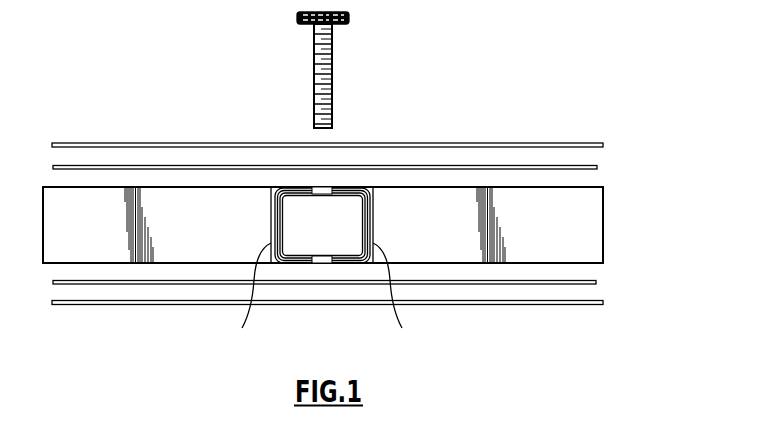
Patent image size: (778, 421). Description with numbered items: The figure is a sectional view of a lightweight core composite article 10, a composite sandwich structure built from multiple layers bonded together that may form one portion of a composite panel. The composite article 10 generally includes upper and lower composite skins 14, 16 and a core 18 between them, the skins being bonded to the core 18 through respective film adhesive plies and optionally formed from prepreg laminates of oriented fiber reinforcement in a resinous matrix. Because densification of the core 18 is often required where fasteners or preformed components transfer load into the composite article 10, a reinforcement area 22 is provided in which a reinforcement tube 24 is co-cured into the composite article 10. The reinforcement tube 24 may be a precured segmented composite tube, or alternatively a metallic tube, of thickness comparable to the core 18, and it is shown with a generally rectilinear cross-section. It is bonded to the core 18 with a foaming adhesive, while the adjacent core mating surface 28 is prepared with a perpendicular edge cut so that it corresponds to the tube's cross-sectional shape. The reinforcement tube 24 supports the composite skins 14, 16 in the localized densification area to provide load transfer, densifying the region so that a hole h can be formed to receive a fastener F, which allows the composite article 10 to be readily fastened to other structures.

The composite article 10 is at (578, 73).
The composite skin 14 is at (518, 143).
The composite skin 16 is at (523, 305).
The core 18 is at (588, 233).
The reinforcement area 22 is at (270, 320).
The reinforcement tube 24 is at (356, 188).
The core mating surface 28 is at (377, 210).
The hole h is at (322, 189).
The fastener F is at (332, 70).